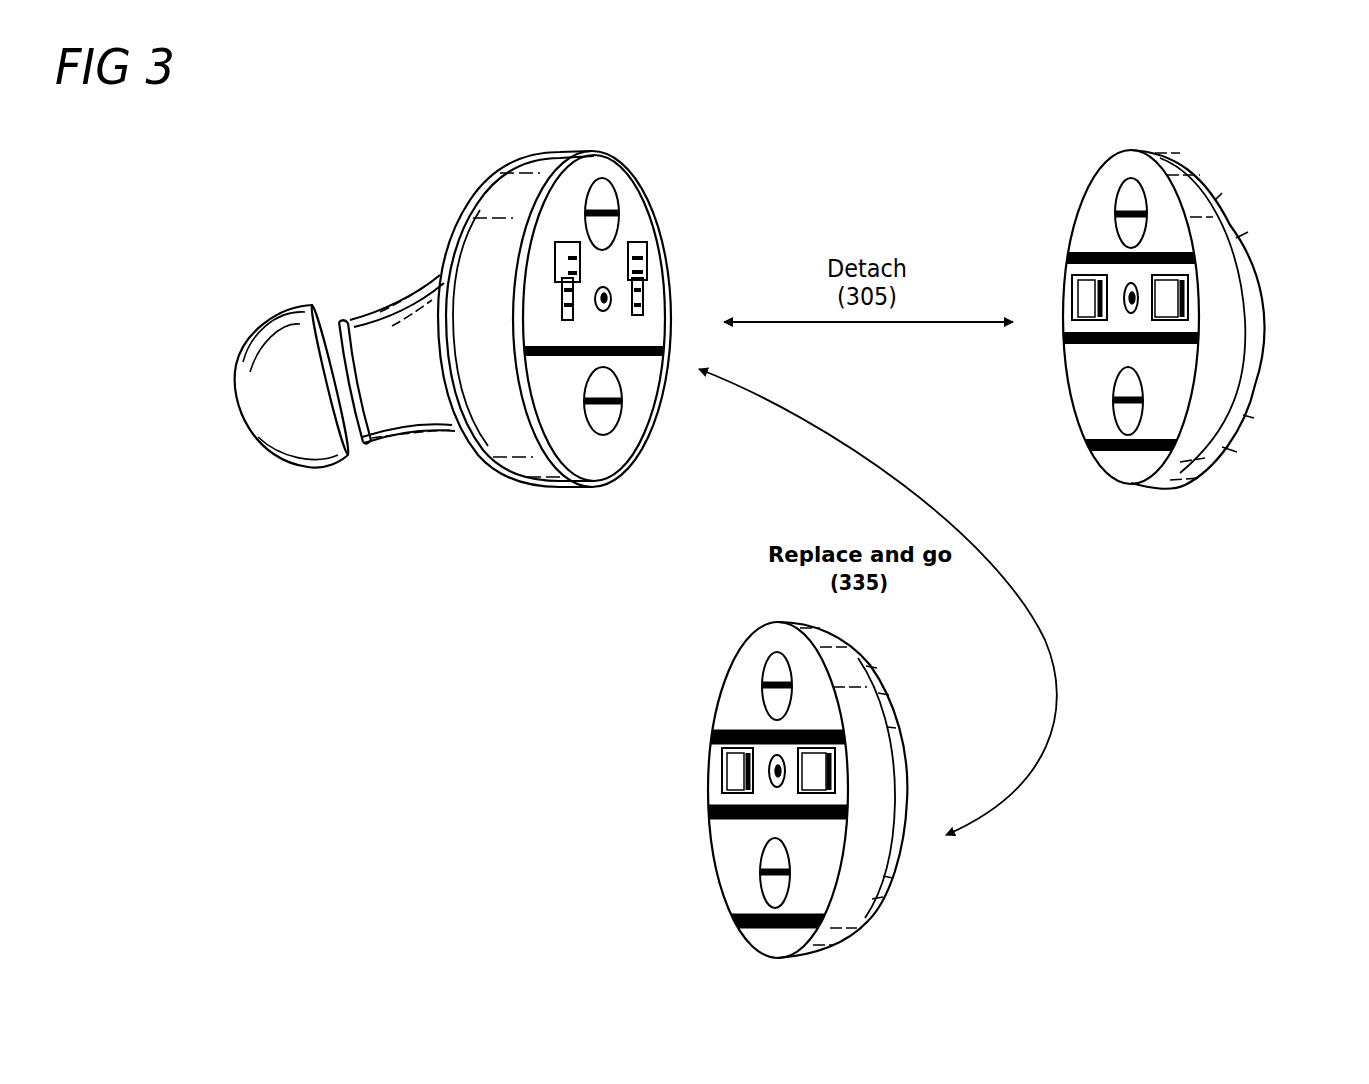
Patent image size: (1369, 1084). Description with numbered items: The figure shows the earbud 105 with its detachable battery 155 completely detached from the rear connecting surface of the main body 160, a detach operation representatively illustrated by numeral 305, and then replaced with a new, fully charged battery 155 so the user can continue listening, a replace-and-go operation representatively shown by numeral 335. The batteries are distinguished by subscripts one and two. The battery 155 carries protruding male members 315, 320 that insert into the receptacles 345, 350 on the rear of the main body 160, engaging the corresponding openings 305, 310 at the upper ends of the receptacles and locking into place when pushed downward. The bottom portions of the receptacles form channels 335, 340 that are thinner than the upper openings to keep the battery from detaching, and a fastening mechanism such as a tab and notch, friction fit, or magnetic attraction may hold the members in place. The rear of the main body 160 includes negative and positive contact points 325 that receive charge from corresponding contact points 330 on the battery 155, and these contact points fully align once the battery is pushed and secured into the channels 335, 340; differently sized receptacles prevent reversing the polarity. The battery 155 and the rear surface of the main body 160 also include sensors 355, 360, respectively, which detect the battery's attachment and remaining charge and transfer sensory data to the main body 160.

The earbud 105 is at (504, 328).
The main body 160 is at (410, 445).
The detachable battery 155 is at (1026, 515).
The opening / detachment 305 is at (553, 259).
The opening 310 is at (645, 273).
The male member 315 is at (1187, 290).
The male member 320 is at (1073, 278).
The contact points 325 is at (603, 193).
The contact points 330 is at (1125, 195).
The channel / replace and go 335 is at (558, 299).
The channel 340 is at (643, 297).
The receptacle 345 is at (563, 226).
The receptacle 350 is at (641, 226).
The sensor 355 is at (606, 307).
The sensor 360 is at (1135, 288).